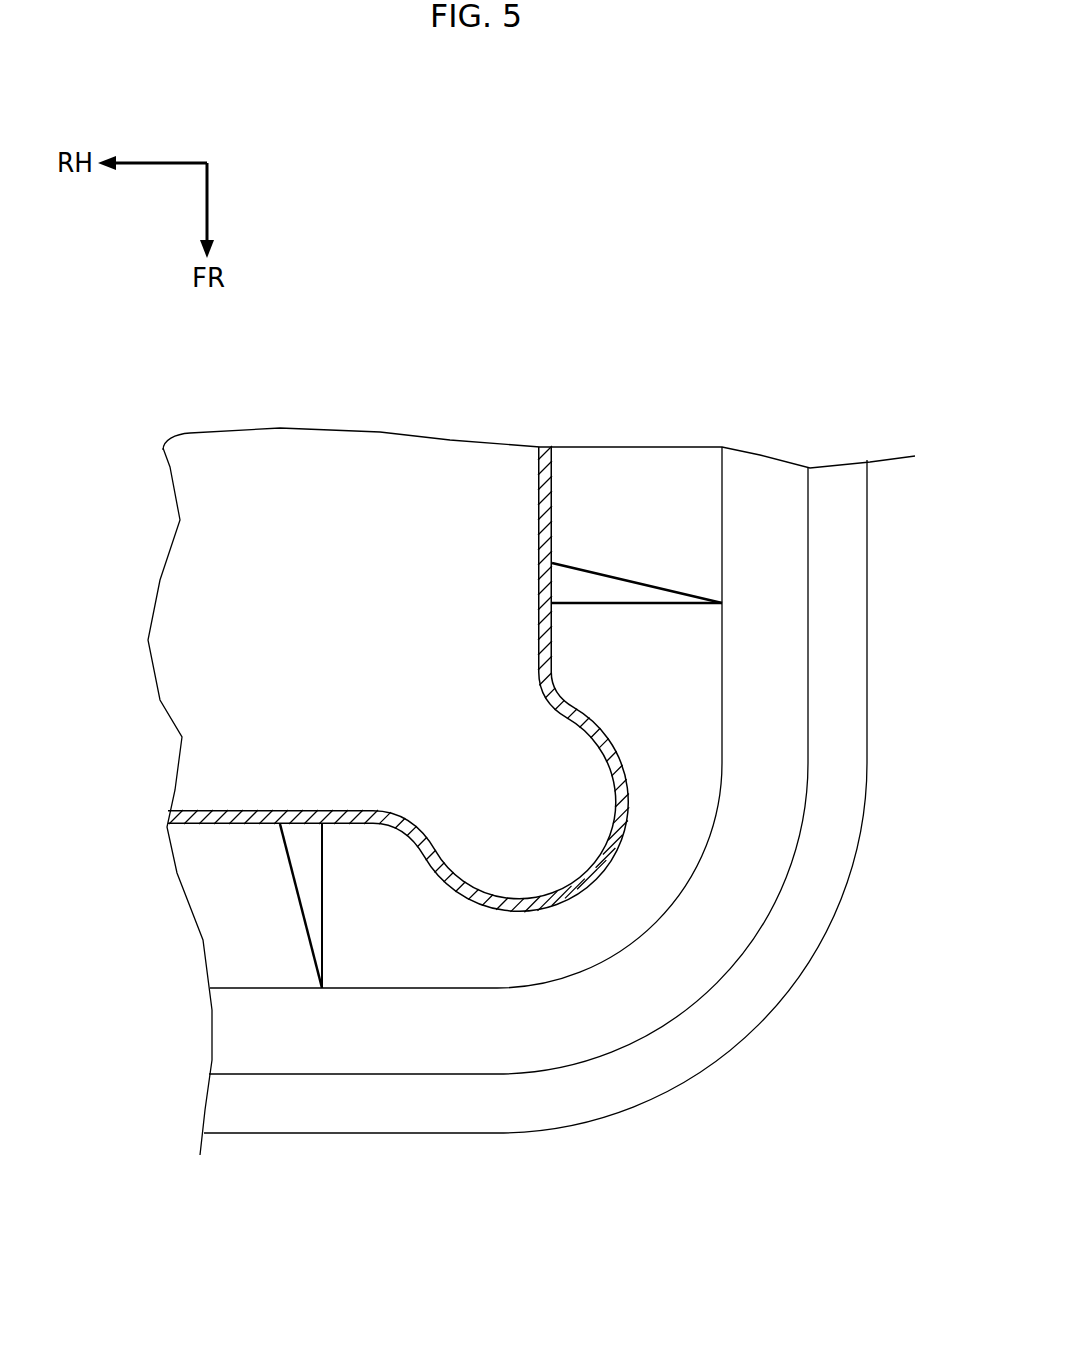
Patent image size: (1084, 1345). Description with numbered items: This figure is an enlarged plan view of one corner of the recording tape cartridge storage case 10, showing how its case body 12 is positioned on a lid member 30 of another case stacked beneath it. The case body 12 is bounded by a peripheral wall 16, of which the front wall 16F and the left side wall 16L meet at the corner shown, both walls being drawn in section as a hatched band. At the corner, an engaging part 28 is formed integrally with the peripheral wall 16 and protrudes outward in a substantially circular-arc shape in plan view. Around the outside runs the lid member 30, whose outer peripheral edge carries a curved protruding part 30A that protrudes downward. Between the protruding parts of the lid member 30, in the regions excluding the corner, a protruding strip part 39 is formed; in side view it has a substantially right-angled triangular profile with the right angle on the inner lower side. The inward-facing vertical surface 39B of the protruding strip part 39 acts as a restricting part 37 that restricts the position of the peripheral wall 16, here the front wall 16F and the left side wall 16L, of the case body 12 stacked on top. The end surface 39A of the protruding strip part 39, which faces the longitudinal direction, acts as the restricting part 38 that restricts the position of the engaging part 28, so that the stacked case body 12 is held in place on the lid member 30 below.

The storage case 10 is at (519, 821).
The case body 12 is at (368, 610).
The peripheral wall 16 is at (368, 687).
The left side wall 16L is at (552, 524).
The front wall 16F is at (228, 826).
The engaging part 28 is at (600, 870).
The lid member 30 is at (570, 806).
The protruding part 30A is at (827, 546).
The restricting part 37 is at (538, 553).
The restricting part 38 is at (610, 595).
The protruding strip part 39 is at (661, 472).
The end surface 39A is at (621, 884).
The vertical surface 39B is at (375, 665).